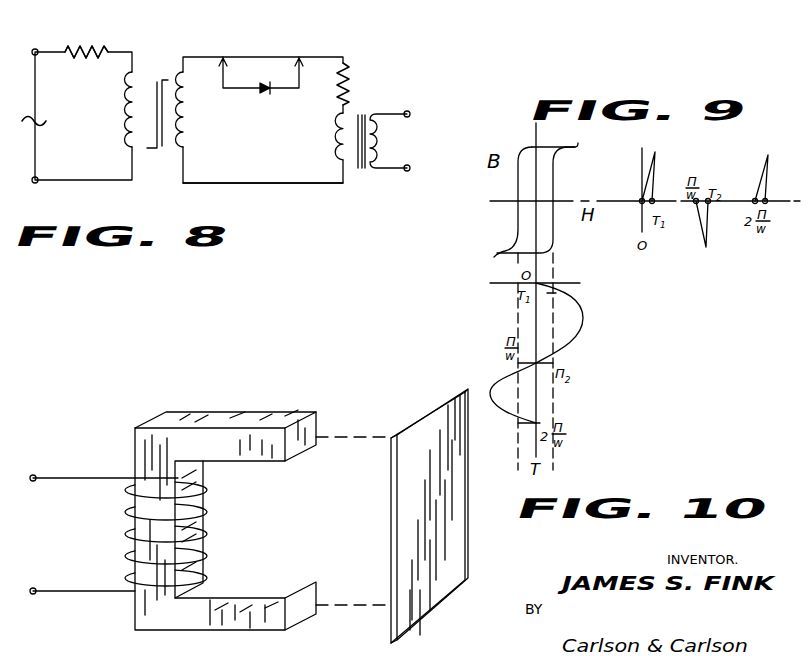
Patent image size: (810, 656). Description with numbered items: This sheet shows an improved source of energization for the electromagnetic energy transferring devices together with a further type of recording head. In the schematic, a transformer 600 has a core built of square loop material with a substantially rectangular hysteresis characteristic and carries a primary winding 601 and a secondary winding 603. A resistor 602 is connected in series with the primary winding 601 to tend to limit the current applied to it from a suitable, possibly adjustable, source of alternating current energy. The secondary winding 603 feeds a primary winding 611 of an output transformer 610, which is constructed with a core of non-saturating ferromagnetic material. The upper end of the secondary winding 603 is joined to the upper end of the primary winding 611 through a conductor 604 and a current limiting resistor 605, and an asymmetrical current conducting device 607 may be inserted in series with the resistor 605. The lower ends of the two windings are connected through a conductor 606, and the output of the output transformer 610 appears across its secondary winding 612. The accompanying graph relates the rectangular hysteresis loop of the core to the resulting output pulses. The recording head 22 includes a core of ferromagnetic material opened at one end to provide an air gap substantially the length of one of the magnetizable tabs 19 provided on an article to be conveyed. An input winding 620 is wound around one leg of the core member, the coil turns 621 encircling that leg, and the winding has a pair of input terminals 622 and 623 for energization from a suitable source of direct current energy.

In FIG. 8, the transformer 600 is at (182, 55).
In FIG. 8, the primary winding 601 is at (130, 119).
In FIG. 8, the resistor 602 is at (82, 50).
In FIG. 8, the secondary winding 603 is at (185, 129).
In FIG. 8, the conductor 604 is at (276, 57).
In FIG. 8, the current limiting resistor 605 is at (350, 88).
In FIG. 8, the conductor 606 is at (316, 184).
In FIG. 8, the asymmetrical current conducting device 607 is at (265, 94).
In FIG. 8, the output transformer 610 is at (388, 201).
In FIG. 8, the primary winding 611 is at (335, 141).
In FIG. 8, the secondary winding 612 is at (383, 159).
In FIG. 10, the head 22 is at (233, 494).
In FIG. 10, the magnetizable tab 19 is at (432, 412).
In FIG. 10, the input winding 620 is at (135, 438).
In FIG. 10, the coil 621 is at (128, 503).
In FIG. 10, the input terminal 622 is at (33, 482).
In FIG. 10, the input terminal 623 is at (34, 589).